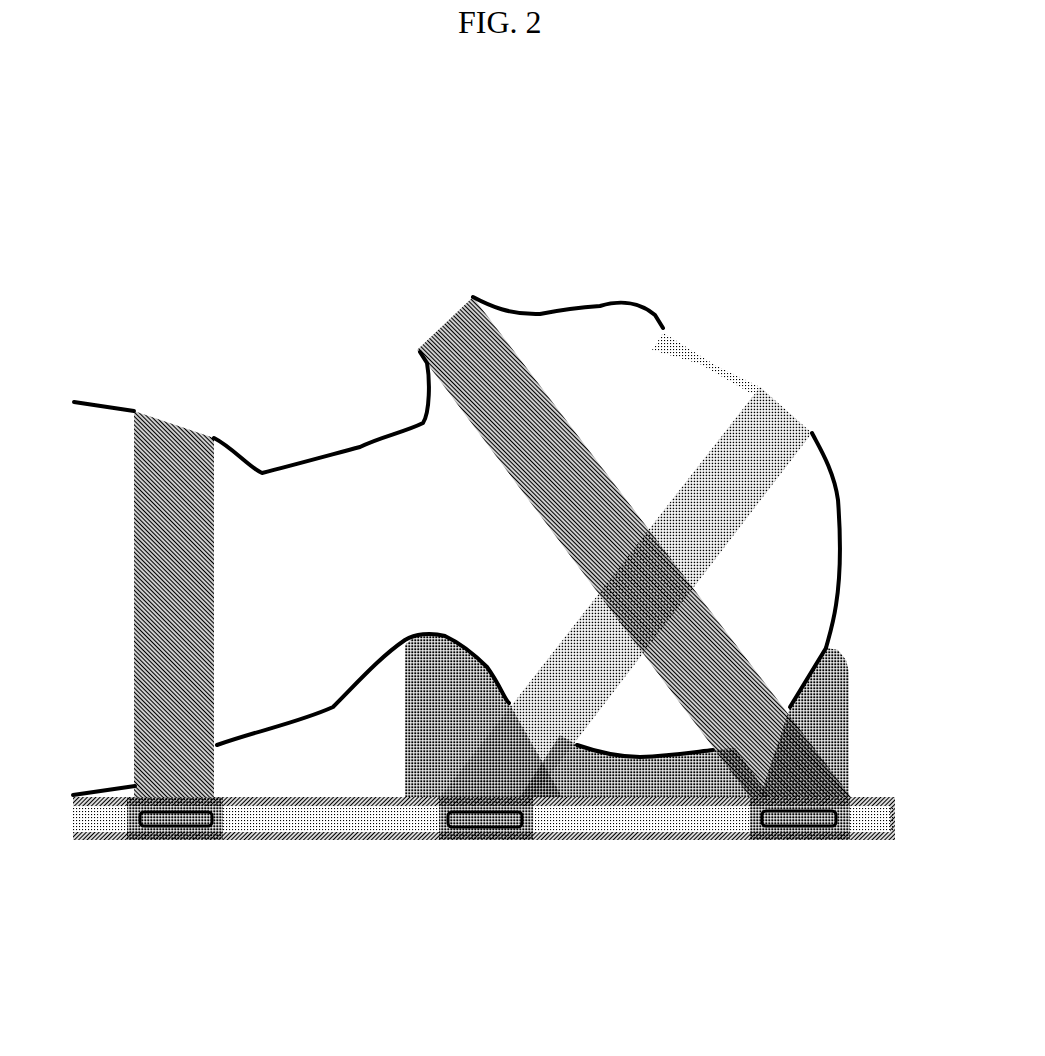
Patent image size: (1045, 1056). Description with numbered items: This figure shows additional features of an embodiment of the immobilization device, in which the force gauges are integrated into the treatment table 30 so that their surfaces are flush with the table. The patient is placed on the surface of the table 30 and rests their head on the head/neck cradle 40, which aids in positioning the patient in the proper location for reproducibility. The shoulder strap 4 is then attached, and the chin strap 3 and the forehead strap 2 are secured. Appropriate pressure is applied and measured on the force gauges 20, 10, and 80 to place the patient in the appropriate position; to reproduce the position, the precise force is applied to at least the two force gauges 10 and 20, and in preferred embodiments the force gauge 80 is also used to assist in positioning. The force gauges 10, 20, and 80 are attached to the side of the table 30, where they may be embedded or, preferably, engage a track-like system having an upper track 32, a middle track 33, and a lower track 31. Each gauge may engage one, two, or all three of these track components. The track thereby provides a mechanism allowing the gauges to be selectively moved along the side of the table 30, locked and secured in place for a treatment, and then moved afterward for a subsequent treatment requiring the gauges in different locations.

The forehead strap 2 is at (797, 410).
The chin strap 3 is at (428, 322).
The shoulder strap 4 is at (178, 420).
The force gauge 10 is at (782, 843).
The force gauge 20 is at (492, 844).
The treatment table 30 is at (489, 825).
The lower track 31 is at (60, 829).
The upper track 32 is at (60, 806).
The middle track 33 is at (877, 817).
The head/neck cradle 40 is at (643, 780).
The force gauge 80 is at (160, 842).